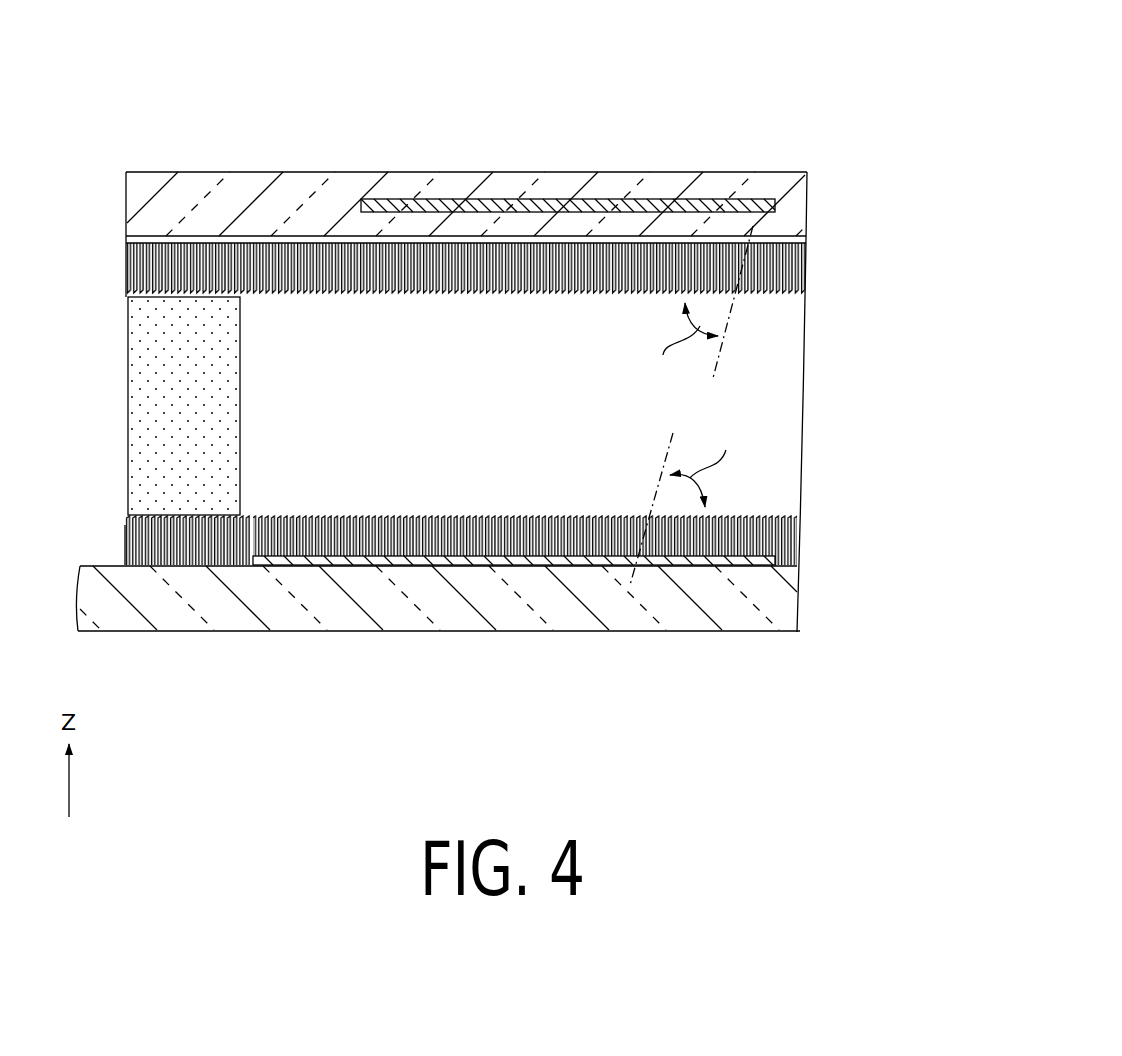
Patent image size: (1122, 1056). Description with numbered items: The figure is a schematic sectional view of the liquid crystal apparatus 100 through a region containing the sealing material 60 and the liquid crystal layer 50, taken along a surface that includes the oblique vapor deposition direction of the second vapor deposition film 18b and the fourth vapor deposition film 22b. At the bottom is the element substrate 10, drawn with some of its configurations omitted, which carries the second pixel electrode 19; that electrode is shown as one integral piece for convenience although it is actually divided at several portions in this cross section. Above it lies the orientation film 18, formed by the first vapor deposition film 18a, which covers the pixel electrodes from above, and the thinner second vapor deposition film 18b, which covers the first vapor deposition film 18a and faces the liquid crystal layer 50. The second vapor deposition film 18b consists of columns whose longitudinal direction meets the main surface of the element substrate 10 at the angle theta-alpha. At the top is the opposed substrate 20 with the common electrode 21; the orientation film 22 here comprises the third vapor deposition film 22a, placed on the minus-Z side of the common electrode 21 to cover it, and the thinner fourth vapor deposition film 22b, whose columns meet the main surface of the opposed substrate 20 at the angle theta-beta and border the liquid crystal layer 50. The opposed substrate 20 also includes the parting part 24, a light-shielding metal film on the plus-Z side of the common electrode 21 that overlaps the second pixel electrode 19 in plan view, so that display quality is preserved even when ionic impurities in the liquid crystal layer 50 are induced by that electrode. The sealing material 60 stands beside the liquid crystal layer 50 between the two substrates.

The liquid crystal apparatus 100 is at (781, 37).
The element substrate 10 is at (232, 632).
The orientation film 18 is at (915, 487).
The first vapor deposition film 18a is at (795, 546).
The second vapor deposition film 18b is at (795, 515).
The second pixel electrode 19 is at (548, 565).
The opposed substrate 20 is at (276, 186).
The common electrode 21 is at (345, 240).
The orientation film 22 is at (917, 244).
The third vapor deposition film 22a is at (797, 258).
The fourth vapor deposition film 22b is at (790, 294).
The parting part 24 is at (604, 212).
The liquid crystal layer 50 is at (787, 400).
The sealing material 60 is at (135, 428).